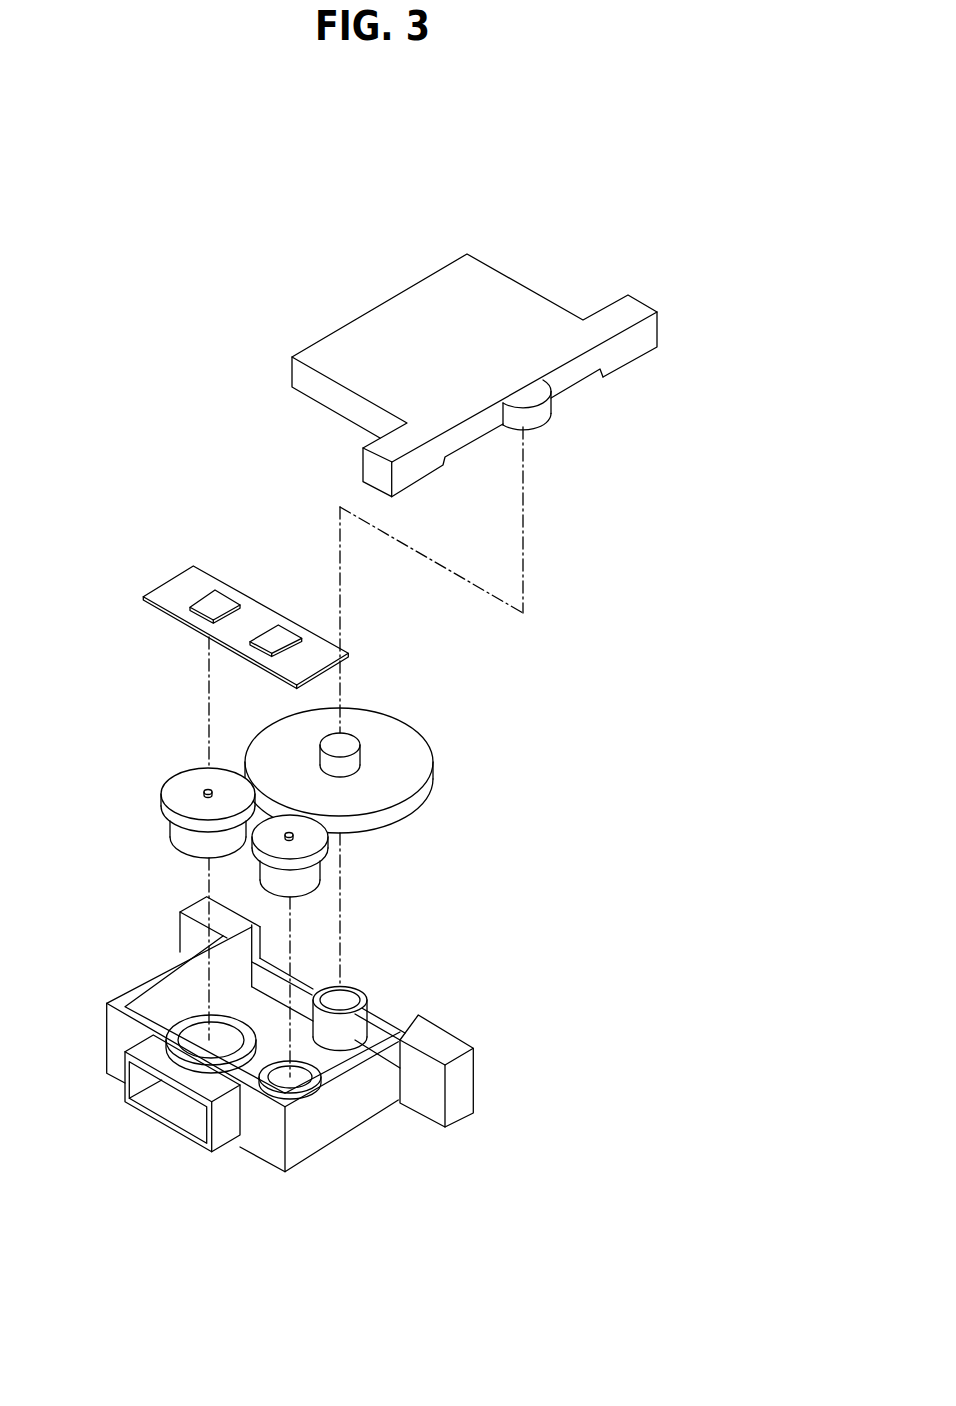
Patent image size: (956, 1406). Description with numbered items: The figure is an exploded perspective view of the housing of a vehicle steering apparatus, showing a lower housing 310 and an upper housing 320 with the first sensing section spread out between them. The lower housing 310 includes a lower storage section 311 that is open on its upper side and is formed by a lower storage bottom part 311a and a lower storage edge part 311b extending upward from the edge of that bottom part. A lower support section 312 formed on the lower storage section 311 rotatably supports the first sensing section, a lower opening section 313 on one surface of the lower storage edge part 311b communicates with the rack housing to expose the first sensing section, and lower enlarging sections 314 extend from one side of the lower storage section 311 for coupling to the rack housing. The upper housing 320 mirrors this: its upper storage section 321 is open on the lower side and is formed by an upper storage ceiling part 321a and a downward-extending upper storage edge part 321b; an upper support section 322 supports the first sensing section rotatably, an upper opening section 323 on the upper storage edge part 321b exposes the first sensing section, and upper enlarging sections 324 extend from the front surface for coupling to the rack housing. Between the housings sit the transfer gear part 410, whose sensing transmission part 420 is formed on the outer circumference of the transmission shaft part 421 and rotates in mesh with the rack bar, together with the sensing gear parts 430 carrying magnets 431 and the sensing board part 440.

The lower housing 310 is at (347, 1101).
The lower storage section 311 is at (253, 1078).
The lower storage bottom part 311a is at (317, 1050).
The lower storage edge part 311b is at (308, 1147).
The lower support section 312 is at (362, 998).
The lower opening section 313 is at (304, 979).
The lower enlarging section 314 is at (463, 1107).
The upper housing 320 is at (486, 310).
The upper storage section 321 is at (474, 331).
The upper storage ceiling part 321a is at (427, 300).
The upper storage edge part 321b is at (367, 310).
The upper support section 322 is at (530, 400).
The upper opening section 323 is at (615, 282).
The upper enlarging section 324 is at (622, 310).
The transfer gear part 410 is at (309, 782).
The sensing transmission part 420 is at (377, 751).
The transmission shaft part 421 is at (349, 742).
The sensing gear part 430 is at (247, 838).
The magnet 431 is at (208, 797).
The sensing board part 440 is at (142, 590).